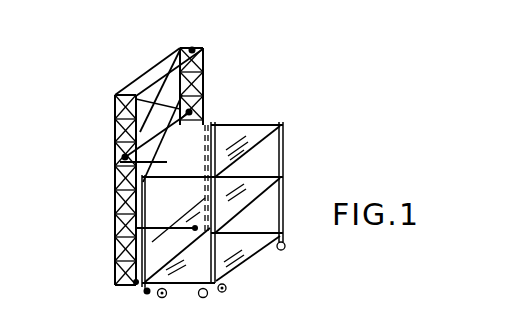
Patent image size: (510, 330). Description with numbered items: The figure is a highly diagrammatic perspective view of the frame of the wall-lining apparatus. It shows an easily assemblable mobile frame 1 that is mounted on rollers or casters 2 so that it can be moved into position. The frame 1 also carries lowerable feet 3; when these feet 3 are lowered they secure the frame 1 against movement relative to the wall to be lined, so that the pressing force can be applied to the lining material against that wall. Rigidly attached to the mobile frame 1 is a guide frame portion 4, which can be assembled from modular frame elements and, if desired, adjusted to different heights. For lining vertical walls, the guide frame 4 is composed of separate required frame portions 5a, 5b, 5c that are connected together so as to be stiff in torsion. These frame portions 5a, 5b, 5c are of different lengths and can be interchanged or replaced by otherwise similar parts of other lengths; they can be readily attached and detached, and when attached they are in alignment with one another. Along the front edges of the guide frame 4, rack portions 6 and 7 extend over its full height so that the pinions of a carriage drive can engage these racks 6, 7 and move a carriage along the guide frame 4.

The frame 1 is at (263, 108).
The rollers or casters 2 is at (200, 296).
The lowerable feet 3 is at (227, 288).
The guide frame portion 4 is at (100, 262).
The frame portion 5a is at (108, 241).
The frame portion 5b is at (108, 188).
The frame portion 5c is at (108, 137).
The rack portion 6 is at (108, 105).
The rack portion 7 is at (178, 44).